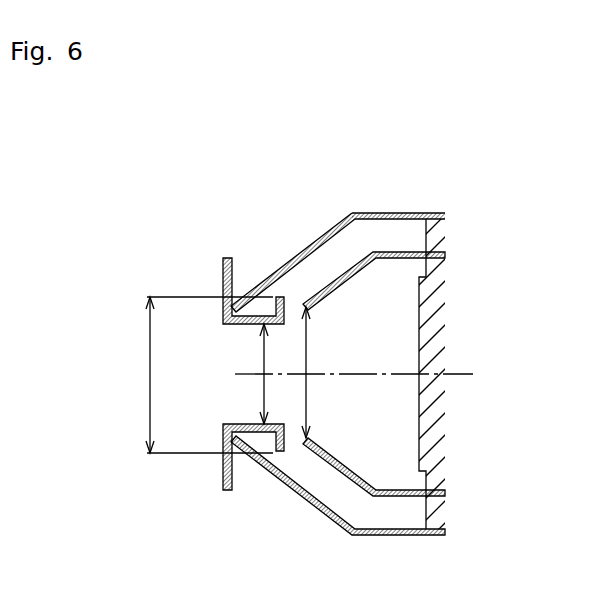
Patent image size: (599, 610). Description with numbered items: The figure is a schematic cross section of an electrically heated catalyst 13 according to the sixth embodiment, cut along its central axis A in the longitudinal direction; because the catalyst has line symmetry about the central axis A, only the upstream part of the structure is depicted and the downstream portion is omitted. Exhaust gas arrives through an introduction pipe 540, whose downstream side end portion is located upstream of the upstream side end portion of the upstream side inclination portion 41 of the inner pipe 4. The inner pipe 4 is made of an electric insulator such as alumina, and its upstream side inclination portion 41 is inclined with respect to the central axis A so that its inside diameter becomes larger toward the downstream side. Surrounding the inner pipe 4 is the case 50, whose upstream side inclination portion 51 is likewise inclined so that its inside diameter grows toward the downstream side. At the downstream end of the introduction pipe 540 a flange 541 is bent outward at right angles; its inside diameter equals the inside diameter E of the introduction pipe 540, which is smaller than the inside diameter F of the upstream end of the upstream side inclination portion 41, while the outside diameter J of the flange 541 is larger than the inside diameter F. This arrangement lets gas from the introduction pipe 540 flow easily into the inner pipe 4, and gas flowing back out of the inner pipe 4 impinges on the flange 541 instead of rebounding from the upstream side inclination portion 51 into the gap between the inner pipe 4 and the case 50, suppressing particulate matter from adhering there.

The electrically heated catalyst 13 is at (357, 185).
The case 50 is at (387, 212).
The upstream side inclination portion 51 is at (302, 250).
The upstream side inclination portion 41 is at (357, 273).
The inner pipe 4 is at (408, 259).
The introduction pipe 540 is at (233, 325).
The flange 541 is at (285, 276).
The central axis A is at (463, 374).
The outside diameter J is at (150, 363).
The inside diameter E is at (264, 393).
The inside diameter F is at (308, 398).